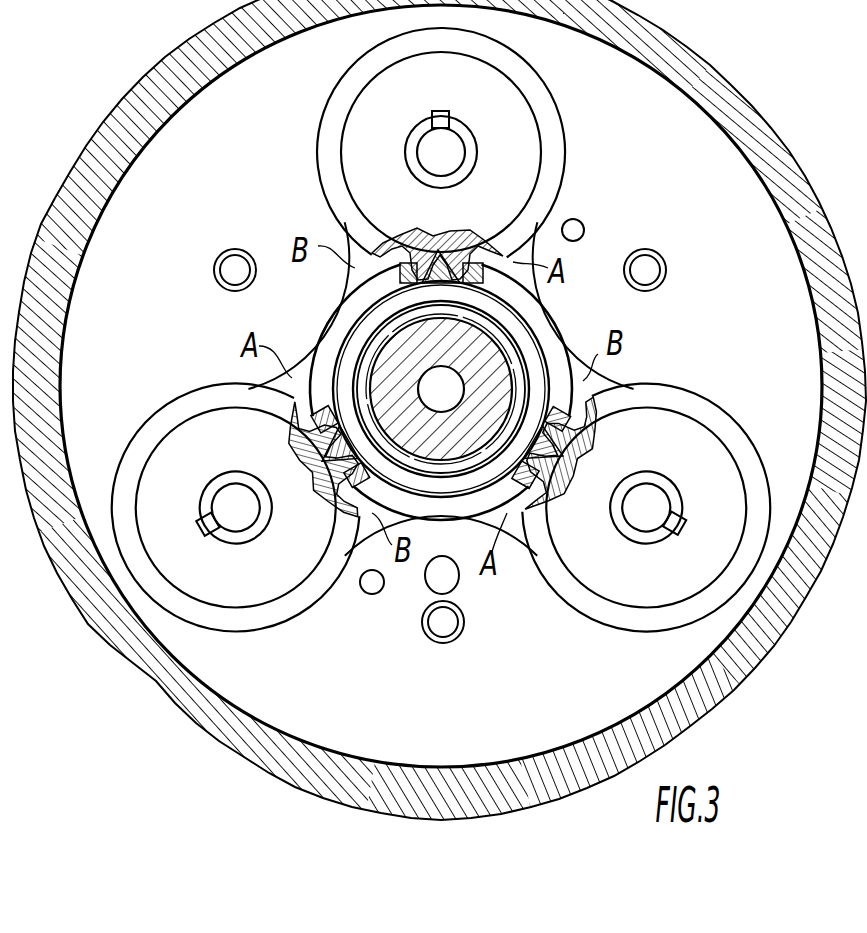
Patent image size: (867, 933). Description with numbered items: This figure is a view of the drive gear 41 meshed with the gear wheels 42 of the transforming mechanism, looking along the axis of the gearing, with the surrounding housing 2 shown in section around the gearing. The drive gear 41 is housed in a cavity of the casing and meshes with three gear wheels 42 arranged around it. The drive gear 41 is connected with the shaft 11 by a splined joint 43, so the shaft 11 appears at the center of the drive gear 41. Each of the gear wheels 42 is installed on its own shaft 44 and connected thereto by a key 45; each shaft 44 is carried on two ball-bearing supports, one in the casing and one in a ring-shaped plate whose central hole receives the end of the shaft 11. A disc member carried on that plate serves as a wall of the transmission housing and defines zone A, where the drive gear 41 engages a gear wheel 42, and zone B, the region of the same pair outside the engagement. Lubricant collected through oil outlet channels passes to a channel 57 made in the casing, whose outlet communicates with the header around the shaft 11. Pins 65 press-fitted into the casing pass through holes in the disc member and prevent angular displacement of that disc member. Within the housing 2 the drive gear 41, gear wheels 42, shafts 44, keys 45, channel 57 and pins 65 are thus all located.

The housing 2 is at (150, 673).
The shaft 11 is at (382, 370).
The drive gear 41 is at (340, 373).
The gear wheel 42 is at (548, 107).
The splined joint 43 is at (520, 352).
The shaft 44 is at (427, 155).
The key 45 is at (452, 116).
The channel 57 is at (448, 575).
The pin 65 is at (575, 220).